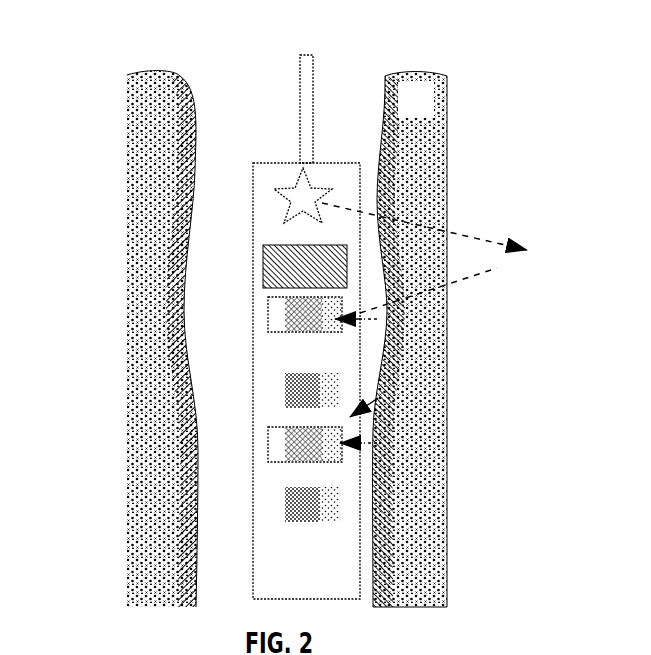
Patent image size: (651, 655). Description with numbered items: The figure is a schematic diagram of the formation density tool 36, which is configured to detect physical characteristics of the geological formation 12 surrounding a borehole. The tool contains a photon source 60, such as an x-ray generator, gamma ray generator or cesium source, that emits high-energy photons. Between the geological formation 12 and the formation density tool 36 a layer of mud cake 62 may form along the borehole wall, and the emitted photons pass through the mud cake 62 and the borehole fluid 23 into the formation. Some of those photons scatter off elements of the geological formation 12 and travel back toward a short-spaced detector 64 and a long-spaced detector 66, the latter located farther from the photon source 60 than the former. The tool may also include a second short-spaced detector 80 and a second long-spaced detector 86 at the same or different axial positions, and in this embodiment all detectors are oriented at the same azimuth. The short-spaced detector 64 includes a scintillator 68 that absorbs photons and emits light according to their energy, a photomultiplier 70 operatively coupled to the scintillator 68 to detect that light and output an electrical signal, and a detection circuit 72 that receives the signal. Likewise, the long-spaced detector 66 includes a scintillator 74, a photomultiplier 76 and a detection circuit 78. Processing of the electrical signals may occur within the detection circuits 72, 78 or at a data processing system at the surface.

The geological formation 12 is at (410, 340).
The borehole fluid 23 is at (205, 125).
The formation density tool 36 is at (345, 155).
The photon source 60 is at (300, 203).
The mud cake 62 is at (177, 167).
The short-spaced detector 64 is at (350, 296).
The long-spaced detector 66 is at (393, 385).
The scintillator 68 is at (333, 317).
The photomultiplier 70 is at (308, 333).
The detection circuit 72 is at (277, 323).
The scintillator 74 is at (333, 462).
The photomultiplier 76 is at (327, 455).
The detection circuit 78 is at (280, 442).
The second short-spaced detector 80 is at (352, 373).
The second long-spaced detector 86 is at (352, 490).